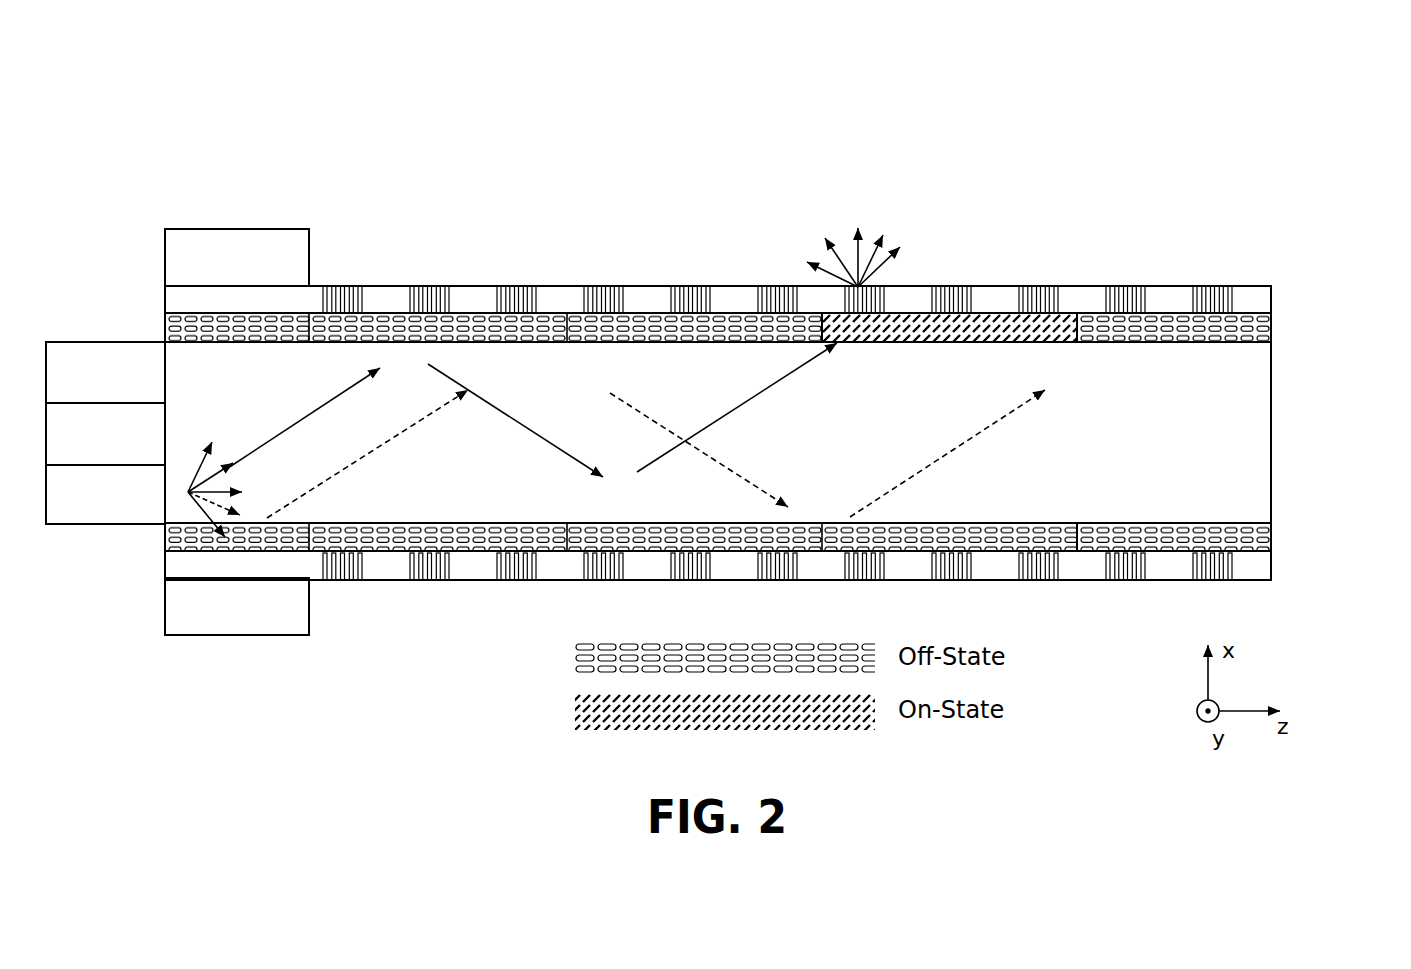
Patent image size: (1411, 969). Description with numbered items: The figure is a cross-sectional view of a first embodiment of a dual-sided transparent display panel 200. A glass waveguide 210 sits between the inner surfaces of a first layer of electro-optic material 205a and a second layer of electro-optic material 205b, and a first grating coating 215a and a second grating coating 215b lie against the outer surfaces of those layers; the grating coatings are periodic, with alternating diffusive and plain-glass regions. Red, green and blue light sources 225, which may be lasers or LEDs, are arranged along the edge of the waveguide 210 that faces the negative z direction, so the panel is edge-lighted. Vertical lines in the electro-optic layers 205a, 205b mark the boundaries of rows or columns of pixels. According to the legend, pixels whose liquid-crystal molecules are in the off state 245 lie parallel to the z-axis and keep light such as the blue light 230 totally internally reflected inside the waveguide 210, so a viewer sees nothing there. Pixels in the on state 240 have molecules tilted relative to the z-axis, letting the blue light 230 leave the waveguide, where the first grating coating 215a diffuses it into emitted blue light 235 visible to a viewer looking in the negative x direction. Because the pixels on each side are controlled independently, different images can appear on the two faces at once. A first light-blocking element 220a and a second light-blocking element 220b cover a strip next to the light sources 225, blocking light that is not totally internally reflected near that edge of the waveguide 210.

The dual-sided transparent display panel 200 is at (755, 90).
The first layer of electro-optic material 205a is at (1272, 328).
The second layer of electro-optic material 205b is at (1272, 535).
The waveguide 210 is at (1213, 430).
The first grating coating 215a is at (1267, 298).
The second grating coating 215b is at (1267, 560).
The first light-blocking element 220a is at (309, 253).
The second light-blocking element 220b is at (309, 607).
The light sources 225 is at (125, 525).
The blue light 230 is at (222, 463).
The diffused and emitted blue light 235 is at (860, 240).
The on state 240 is at (920, 335).
The off state 245 is at (1100, 530).